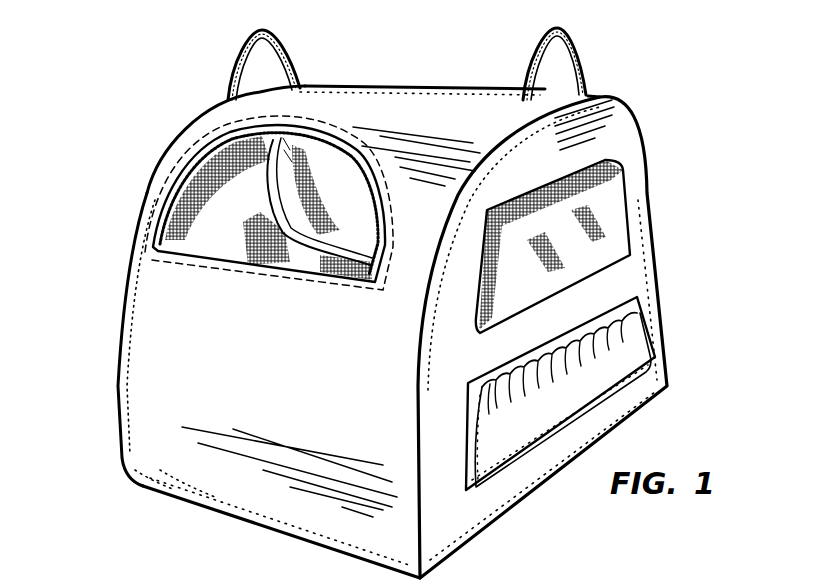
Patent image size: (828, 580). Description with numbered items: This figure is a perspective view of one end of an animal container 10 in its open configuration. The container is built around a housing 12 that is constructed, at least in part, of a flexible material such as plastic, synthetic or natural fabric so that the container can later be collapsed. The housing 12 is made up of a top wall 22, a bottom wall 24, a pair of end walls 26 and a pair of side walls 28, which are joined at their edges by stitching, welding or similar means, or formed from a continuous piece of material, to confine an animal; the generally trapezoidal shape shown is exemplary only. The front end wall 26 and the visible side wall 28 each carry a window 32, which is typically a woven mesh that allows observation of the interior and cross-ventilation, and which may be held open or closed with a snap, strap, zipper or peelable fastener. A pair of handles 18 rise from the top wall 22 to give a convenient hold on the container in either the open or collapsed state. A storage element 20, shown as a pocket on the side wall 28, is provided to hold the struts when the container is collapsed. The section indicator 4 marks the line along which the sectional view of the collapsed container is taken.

The animal container 10 is at (163, 129).
The housing 12 is at (370, 98).
The handle 18 is at (236, 58).
The storage element 20 is at (632, 343).
The top wall 22 is at (449, 110).
The bottom wall 24 is at (230, 519).
The end wall 26 is at (170, 330).
The side wall 28 is at (615, 123).
The window 32 is at (157, 238).
The section line 4- 4 is at (671, 182).